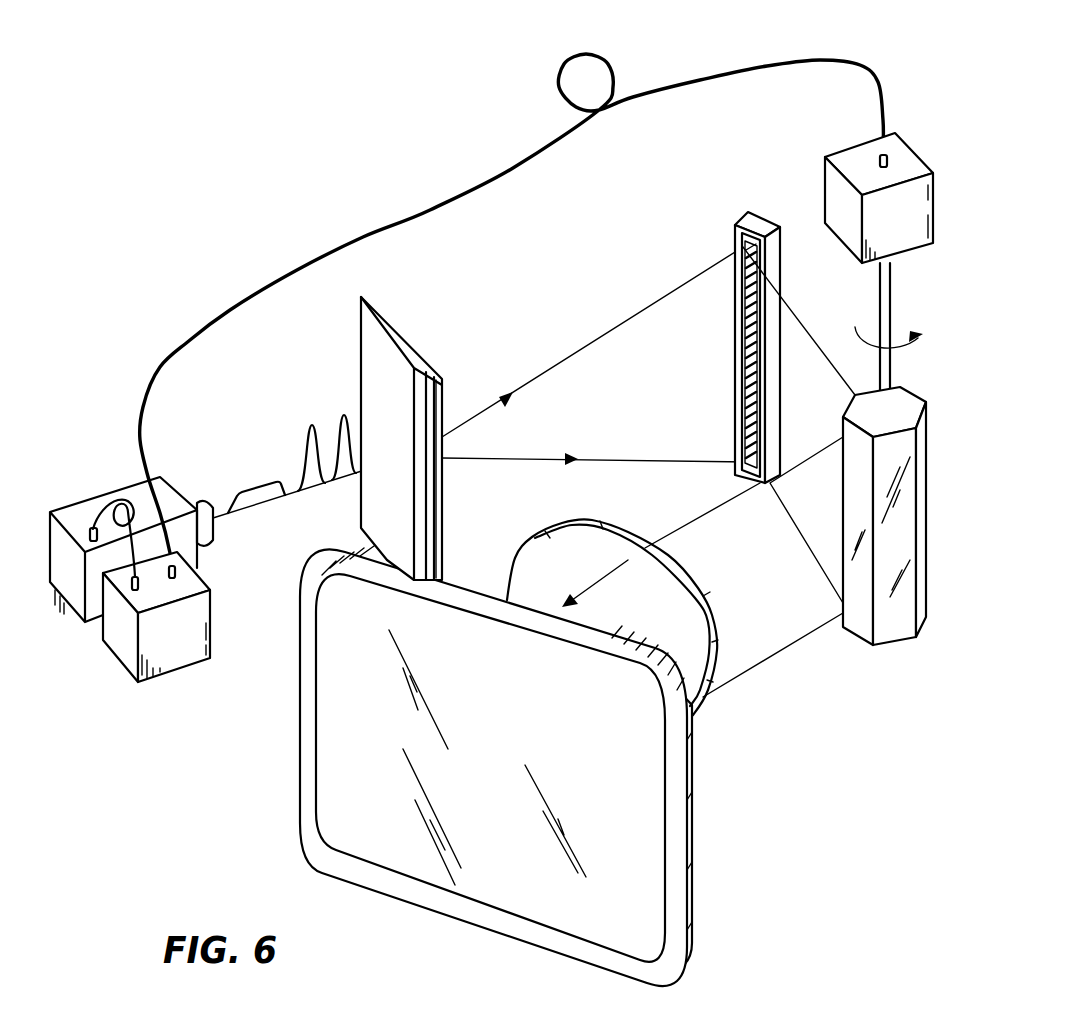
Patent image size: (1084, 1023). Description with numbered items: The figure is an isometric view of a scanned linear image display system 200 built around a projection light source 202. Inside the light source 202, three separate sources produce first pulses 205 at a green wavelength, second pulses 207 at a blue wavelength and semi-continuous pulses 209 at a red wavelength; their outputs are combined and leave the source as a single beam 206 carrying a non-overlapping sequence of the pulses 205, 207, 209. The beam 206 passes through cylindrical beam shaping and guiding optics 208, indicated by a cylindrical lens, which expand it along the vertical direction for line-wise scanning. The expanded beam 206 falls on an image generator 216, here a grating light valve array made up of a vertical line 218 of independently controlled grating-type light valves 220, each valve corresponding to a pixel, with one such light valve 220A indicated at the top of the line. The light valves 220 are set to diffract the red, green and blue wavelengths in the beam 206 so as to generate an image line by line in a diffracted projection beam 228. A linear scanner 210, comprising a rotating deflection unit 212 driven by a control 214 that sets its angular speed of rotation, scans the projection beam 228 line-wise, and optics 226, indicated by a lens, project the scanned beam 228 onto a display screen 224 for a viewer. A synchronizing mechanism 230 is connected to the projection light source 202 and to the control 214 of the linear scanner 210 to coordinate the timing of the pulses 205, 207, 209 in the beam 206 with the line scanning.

The image display system 200 is at (246, 125).
The projection light source 202 is at (108, 490).
The first pulses 205 is at (343, 408).
The beam 206 is at (224, 518).
The second pulses 207 is at (307, 437).
The cylindrical beam shaping and guiding optics 208 is at (360, 342).
The semi-continuous pulses 209 is at (237, 487).
The linear scanner 210 is at (918, 100).
The rotating deflection unit 212 is at (887, 647).
The control 214 is at (830, 147).
The image generator 216 is at (773, 222).
The vertical line 218 is at (740, 227).
The light valves 220 is at (718, 358).
The light valve 220A is at (743, 245).
The display screen 224 is at (679, 854).
The optics 226 is at (515, 557).
The projection beam 228 is at (603, 582).
The synchronizing mechanism 230 is at (188, 667).